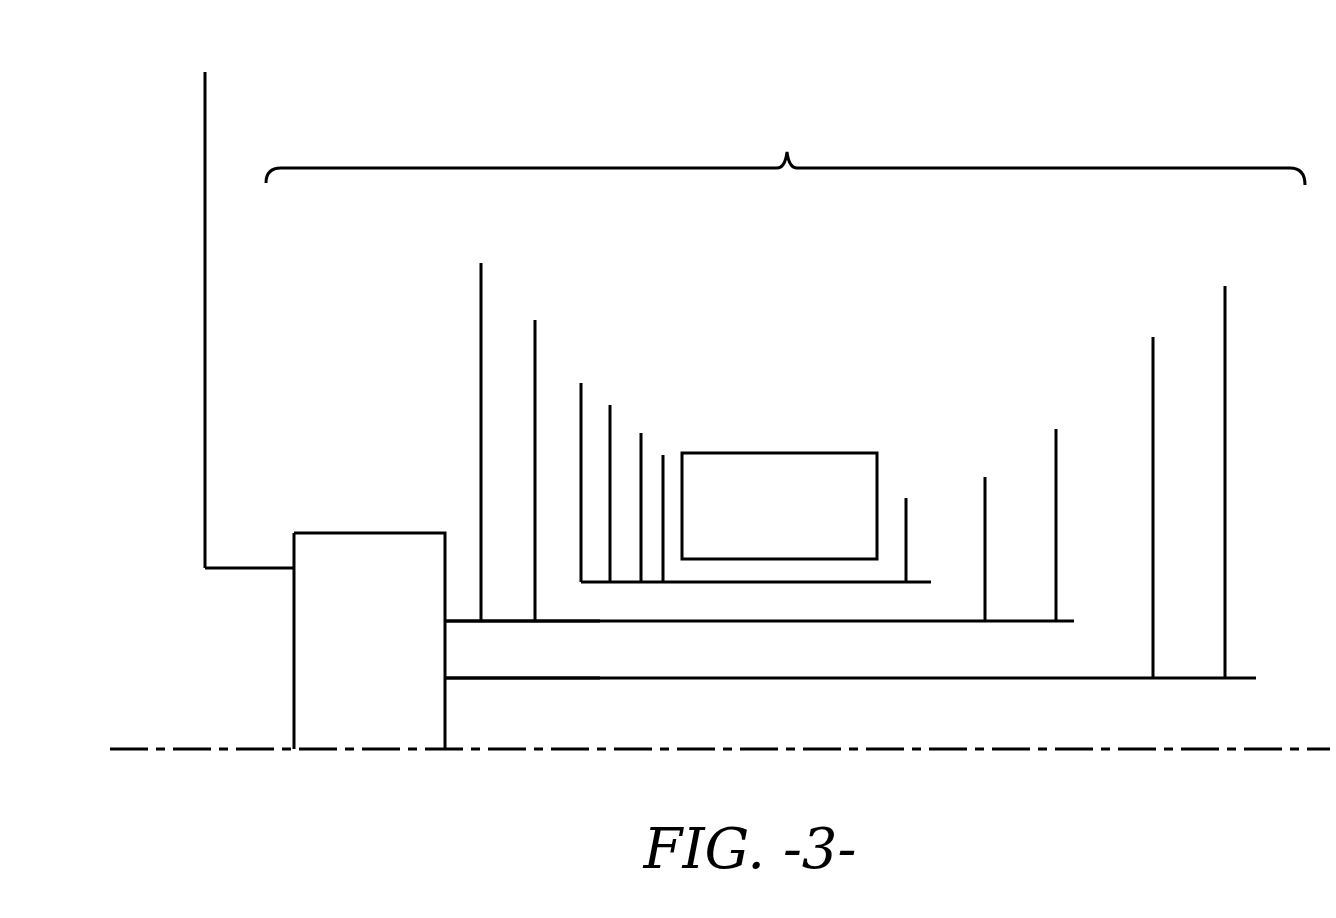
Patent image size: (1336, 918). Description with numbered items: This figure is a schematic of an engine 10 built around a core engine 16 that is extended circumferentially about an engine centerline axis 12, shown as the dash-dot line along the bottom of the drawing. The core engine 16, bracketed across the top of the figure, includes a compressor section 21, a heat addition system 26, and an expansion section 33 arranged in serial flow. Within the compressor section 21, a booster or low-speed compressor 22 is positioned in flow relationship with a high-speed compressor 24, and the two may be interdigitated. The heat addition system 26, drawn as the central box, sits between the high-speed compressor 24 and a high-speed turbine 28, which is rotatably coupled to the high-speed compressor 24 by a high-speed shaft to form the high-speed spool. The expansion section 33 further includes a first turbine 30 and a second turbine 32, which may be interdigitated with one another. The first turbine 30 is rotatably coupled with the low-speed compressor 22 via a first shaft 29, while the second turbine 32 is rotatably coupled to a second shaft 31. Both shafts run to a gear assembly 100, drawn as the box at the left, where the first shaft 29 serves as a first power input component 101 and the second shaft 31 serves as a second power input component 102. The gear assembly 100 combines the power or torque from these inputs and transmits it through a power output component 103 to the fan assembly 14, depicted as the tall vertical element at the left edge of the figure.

The system 10 is at (926, 108).
The engine centerline axis 12 is at (207, 751).
The fan assembly 14 is at (214, 160).
The core engine 16 is at (785, 150).
The compressor section 21 is at (608, 300).
The low-speed compressor 22 is at (510, 290).
The high-speed compressor 24 is at (627, 418).
The heat addition system 26 is at (796, 518).
The high-speed turbine 28 is at (900, 455).
The first shaft 29 is at (745, 622).
The first turbine 30 is at (1010, 430).
The second shaft 31 is at (658, 680).
The second turbine 32 is at (1183, 285).
The expansion section 33 is at (1046, 320).
The gear assembly 100 is at (342, 660).
The first power input component 101 is at (462, 623).
The second power input component 102 is at (478, 680).
The power output component 103 is at (230, 567).